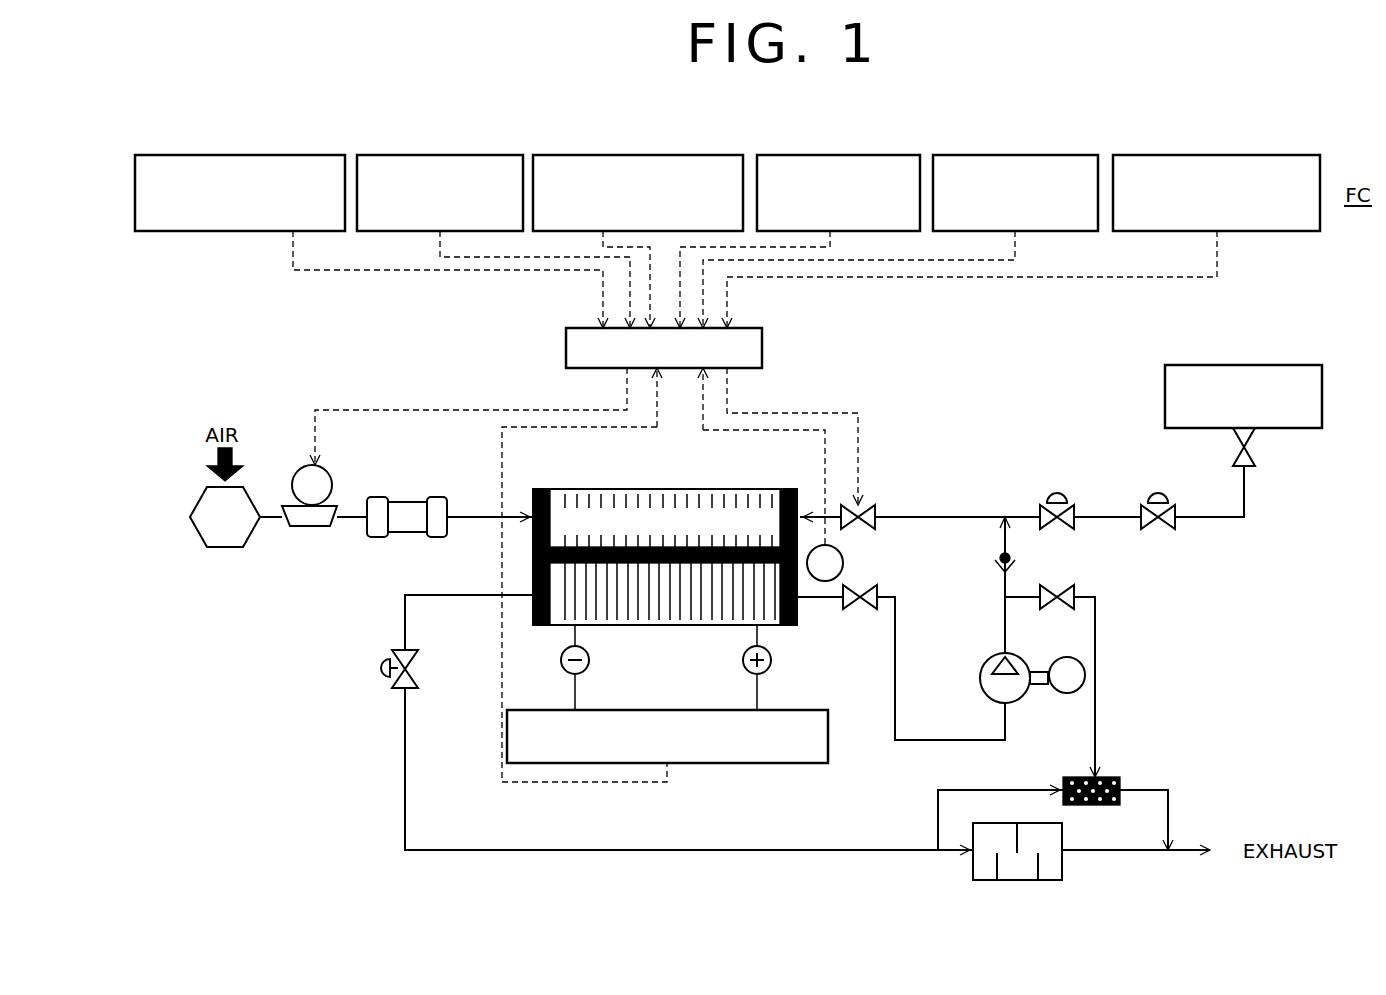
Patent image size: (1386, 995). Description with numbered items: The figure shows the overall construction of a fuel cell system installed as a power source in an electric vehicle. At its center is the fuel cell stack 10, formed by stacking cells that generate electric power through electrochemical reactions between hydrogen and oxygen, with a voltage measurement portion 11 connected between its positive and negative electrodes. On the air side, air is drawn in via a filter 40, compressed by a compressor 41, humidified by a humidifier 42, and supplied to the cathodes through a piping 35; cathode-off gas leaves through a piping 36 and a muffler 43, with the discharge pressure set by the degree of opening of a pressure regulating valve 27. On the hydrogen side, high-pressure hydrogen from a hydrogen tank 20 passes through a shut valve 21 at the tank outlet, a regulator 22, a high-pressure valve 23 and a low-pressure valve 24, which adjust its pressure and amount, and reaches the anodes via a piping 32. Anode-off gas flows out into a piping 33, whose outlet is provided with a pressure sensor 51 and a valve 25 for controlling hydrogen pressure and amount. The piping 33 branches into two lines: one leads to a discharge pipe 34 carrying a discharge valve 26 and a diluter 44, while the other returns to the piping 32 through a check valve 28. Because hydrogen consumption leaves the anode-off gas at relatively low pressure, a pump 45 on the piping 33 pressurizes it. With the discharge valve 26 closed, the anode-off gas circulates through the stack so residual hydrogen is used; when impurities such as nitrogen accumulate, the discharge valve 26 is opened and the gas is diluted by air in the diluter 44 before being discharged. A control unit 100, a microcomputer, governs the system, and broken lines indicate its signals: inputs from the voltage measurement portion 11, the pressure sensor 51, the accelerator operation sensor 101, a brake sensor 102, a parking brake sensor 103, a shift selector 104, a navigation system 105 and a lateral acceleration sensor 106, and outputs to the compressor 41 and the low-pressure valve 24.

The fuel cell stack 10 is at (640, 489).
The voltage measurement portion 11 is at (678, 710).
The hydrogen tank 20 is at (1165, 400).
The shut valve 21 is at (1260, 457).
The regulator 22 is at (1158, 529).
The high-pressure valve 23 is at (1075, 510).
The low-pressure valve 24 is at (862, 505).
The valve 25 is at (853, 610).
The discharge valve 26 is at (1055, 585).
The pressure regulating valve 27 is at (415, 670).
The check valve 28 is at (995, 560).
The piping 32 is at (938, 517).
The piping 33 is at (940, 740).
The discharge pipe 34 is at (1096, 650).
The piping 35 is at (490, 517).
The piping 36 is at (480, 600).
The filter 40 is at (230, 548).
The compressor 41 is at (305, 527).
The humidifier 42 is at (410, 497).
The muffler 43 is at (1025, 823).
The diluter 44 is at (1125, 780).
The pump 45 is at (985, 660).
The pressure sensor 51 is at (843, 562).
The control unit 100 is at (566, 348).
The accelerator operation sensor 101 is at (292, 155).
The brake sensor 102 is at (455, 155).
The parking brake sensor 103 is at (638, 155).
The shift selector 104 is at (862, 155).
The navigation system 105 is at (1030, 157).
The lateral acceleration sensor 106 is at (1253, 155).